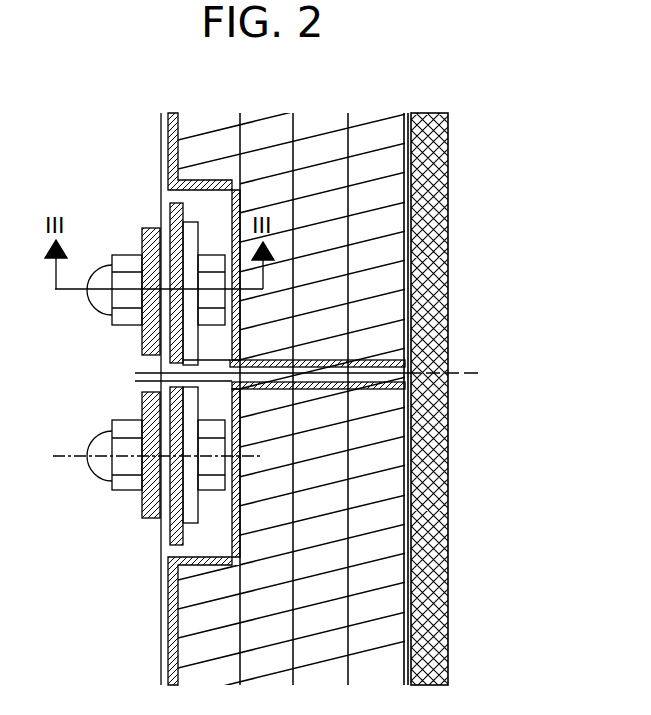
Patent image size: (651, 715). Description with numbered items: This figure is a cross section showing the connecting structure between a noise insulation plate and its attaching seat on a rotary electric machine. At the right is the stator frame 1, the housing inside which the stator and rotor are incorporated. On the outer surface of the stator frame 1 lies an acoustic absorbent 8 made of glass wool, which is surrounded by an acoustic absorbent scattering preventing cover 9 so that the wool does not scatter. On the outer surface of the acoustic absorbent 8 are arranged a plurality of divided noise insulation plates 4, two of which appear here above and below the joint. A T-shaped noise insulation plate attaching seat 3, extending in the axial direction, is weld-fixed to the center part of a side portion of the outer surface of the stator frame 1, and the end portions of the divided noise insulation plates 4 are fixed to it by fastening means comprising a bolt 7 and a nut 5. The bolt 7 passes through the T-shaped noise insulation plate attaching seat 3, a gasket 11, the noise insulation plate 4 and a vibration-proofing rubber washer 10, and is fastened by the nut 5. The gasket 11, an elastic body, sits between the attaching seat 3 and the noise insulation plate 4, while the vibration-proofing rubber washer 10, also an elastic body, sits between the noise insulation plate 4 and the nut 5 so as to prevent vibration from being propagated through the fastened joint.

The stator frame 1 is at (437, 455).
The T-shaped noise insulation plate attaching seat 3 is at (192, 223).
The noise insulation plate 4 is at (160, 630).
The nut 5 is at (120, 445).
The bolt 7 is at (212, 468).
The acoustic absorbent 8 is at (385, 190).
The acoustic absorbent scattering preventing cover 9 is at (410, 278).
The vibration-proofing rubber washer 10 is at (142, 412).
The gasket 11 is at (162, 533).